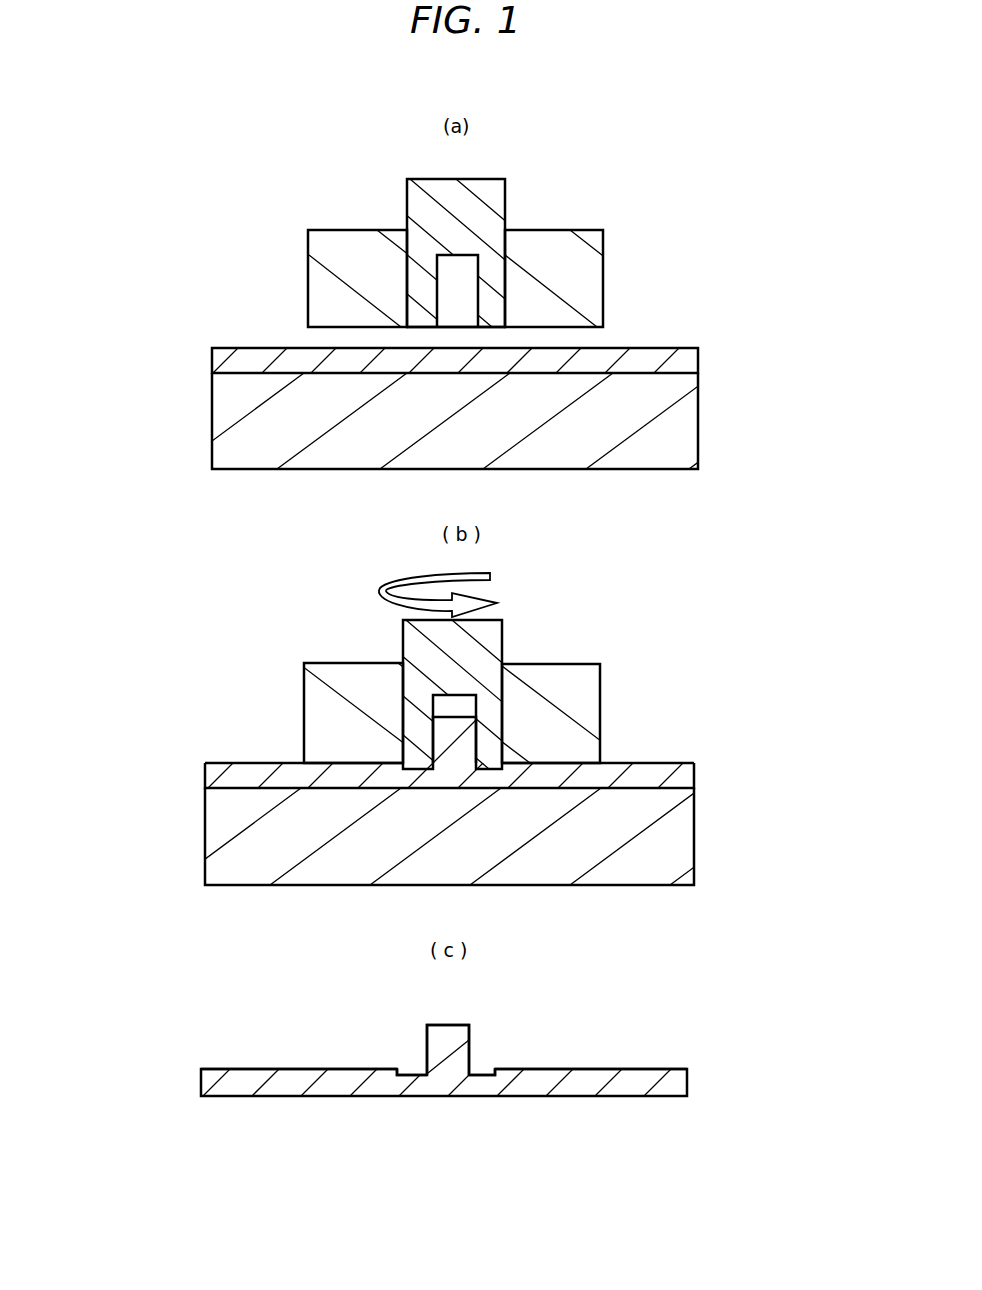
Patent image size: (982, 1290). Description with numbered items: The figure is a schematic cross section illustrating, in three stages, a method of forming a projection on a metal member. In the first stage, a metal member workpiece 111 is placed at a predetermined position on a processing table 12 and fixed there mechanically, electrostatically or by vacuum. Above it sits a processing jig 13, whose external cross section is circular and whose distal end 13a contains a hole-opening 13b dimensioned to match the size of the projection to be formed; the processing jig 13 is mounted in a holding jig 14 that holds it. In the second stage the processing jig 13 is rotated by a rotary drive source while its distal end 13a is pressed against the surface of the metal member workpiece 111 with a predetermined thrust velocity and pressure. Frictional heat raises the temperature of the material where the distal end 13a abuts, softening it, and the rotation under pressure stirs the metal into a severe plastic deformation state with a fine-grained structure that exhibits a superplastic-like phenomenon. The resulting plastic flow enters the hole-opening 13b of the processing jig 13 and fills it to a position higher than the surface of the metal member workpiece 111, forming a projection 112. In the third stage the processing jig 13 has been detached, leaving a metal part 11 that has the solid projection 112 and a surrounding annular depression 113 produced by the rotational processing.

The metal part 11 is at (548, 1022).
The processing table 12 is at (230, 408).
The processing jig 13 is at (497, 192).
The distal end 13a is at (420, 328).
The hole-opening 13b is at (457, 277).
The holding jig 14 is at (589, 270).
The metal member workpiece 111 is at (213, 355).
The projection 112 is at (458, 737).
The annular depression 113 is at (408, 1062).